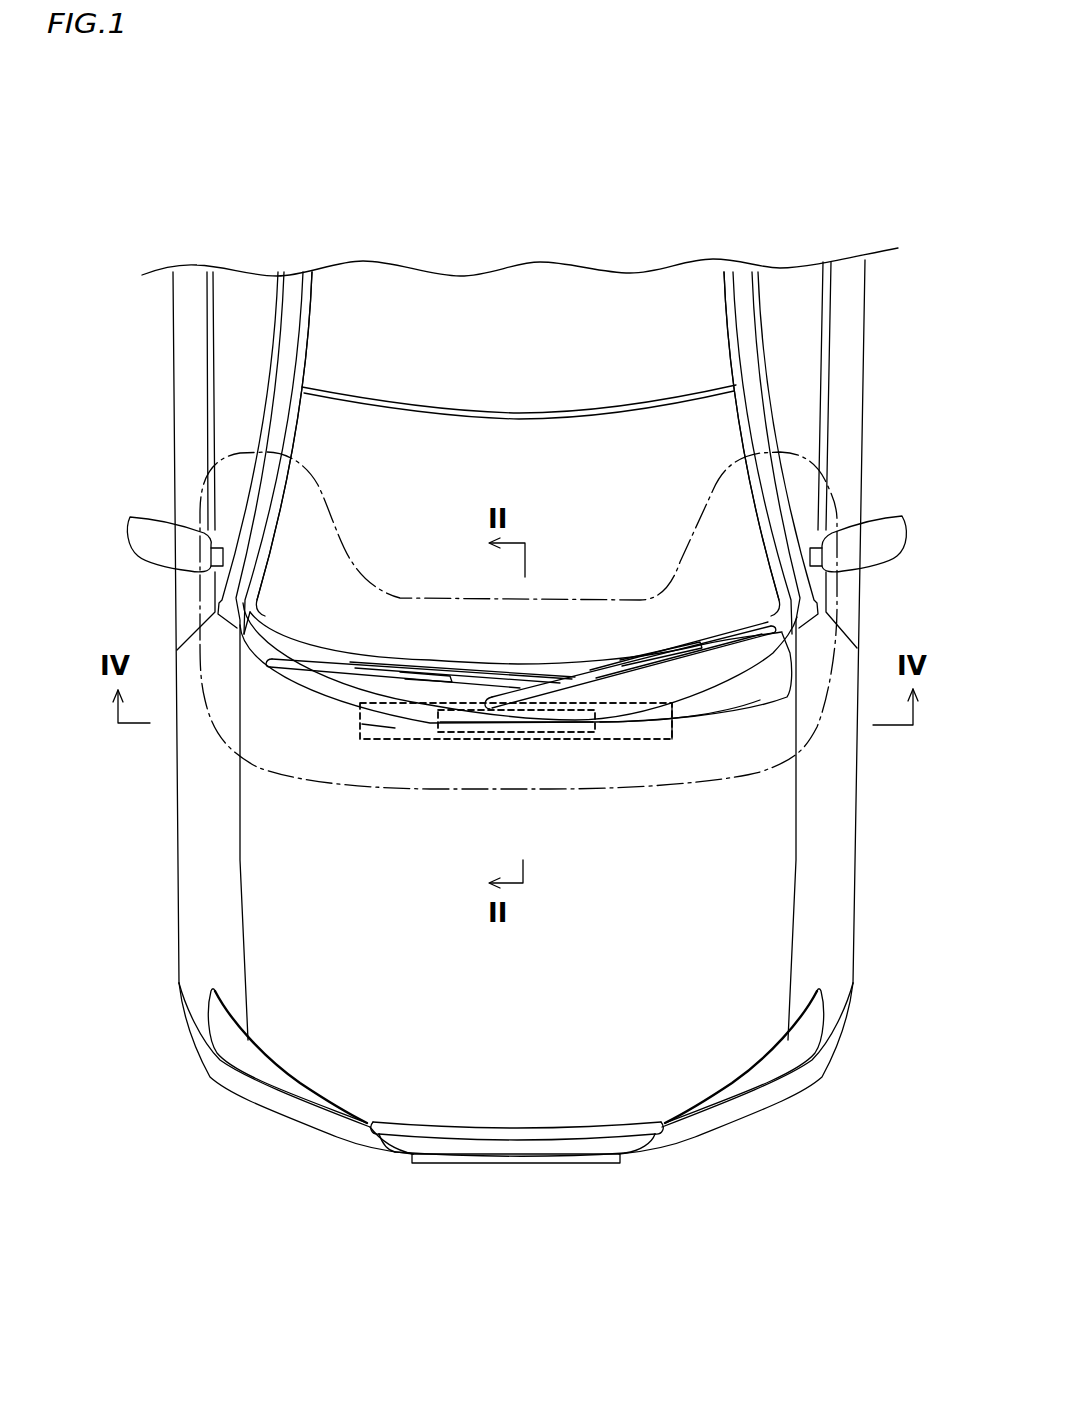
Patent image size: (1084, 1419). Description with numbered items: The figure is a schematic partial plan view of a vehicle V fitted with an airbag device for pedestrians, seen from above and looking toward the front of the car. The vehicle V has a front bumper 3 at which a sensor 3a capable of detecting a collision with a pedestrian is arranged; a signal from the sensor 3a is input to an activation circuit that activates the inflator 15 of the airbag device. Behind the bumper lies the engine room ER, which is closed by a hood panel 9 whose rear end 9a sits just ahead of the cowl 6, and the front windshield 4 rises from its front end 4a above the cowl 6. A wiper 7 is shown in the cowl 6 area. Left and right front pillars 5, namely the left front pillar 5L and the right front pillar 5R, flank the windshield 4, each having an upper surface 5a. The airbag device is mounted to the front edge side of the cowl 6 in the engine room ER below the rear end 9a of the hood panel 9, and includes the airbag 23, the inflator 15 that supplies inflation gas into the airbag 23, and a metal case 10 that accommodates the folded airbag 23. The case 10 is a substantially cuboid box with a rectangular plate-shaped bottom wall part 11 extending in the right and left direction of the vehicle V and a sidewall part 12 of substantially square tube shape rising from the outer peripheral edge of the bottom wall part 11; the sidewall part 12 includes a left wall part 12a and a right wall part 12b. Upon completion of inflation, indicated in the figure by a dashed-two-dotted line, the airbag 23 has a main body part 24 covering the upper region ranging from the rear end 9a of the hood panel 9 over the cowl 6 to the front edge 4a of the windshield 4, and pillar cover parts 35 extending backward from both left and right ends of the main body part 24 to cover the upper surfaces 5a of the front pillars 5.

The vehicle V is at (282, 170).
The front bumper 3 is at (263, 1103).
The sensor 3a is at (332, 1130).
The front windshield 4 is at (505, 437).
The front end of the windshield 4a is at (413, 647).
The front pillars 5 is at (275, 420).
The right front pillar 5R is at (266, 408).
The left front pillar 5L is at (760, 420).
The upper surfaces of the front pillars 5a is at (232, 588).
The cowl 6 is at (568, 670).
The wiper 7 is at (627, 664).
The hood panel 9 is at (541, 1078).
The rear end of the hood panel 9a is at (398, 727).
The case 10 is at (388, 730).
The bottom wall part 11 is at (464, 815).
The sidewall part 12 is at (360, 715).
The right wall part 12b is at (459, 799).
The left wall part 12a is at (672, 722).
The inflator 15 is at (568, 740).
The airbag 23 is at (630, 763).
The main body part 24 is at (460, 773).
The pillar cover parts 35 is at (232, 482).
The engine room ER is at (452, 987).